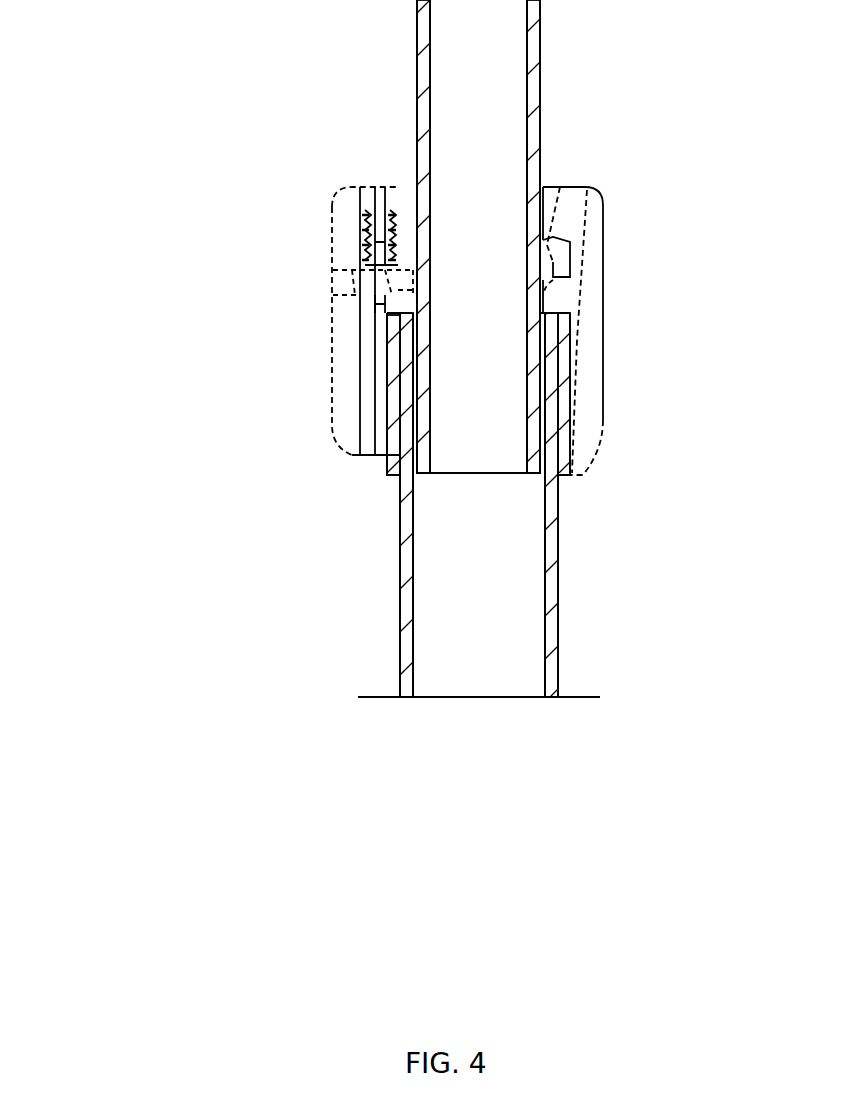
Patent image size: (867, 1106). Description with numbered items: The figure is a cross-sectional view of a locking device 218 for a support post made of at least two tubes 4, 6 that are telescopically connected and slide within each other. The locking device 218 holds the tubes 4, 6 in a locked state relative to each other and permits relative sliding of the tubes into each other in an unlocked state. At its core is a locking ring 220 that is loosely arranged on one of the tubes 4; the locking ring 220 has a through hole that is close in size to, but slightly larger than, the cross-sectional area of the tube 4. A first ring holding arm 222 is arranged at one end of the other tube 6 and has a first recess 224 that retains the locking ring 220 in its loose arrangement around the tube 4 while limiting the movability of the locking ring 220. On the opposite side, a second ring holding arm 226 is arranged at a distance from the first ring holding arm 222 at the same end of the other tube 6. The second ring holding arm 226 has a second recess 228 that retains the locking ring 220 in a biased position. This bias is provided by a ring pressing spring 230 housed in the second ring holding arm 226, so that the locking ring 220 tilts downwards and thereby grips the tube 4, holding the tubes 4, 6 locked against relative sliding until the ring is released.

The tube 4 is at (540, 57).
The tube 6 is at (560, 560).
The locking device 218 is at (170, 225).
The locking ring 220 is at (547, 252).
The first ring holding arm 222 is at (603, 410).
The first recess 224 is at (552, 240).
The second ring holding arm 226 is at (333, 400).
The second recess 228 is at (385, 316).
The ring pressing spring 230 is at (398, 212).